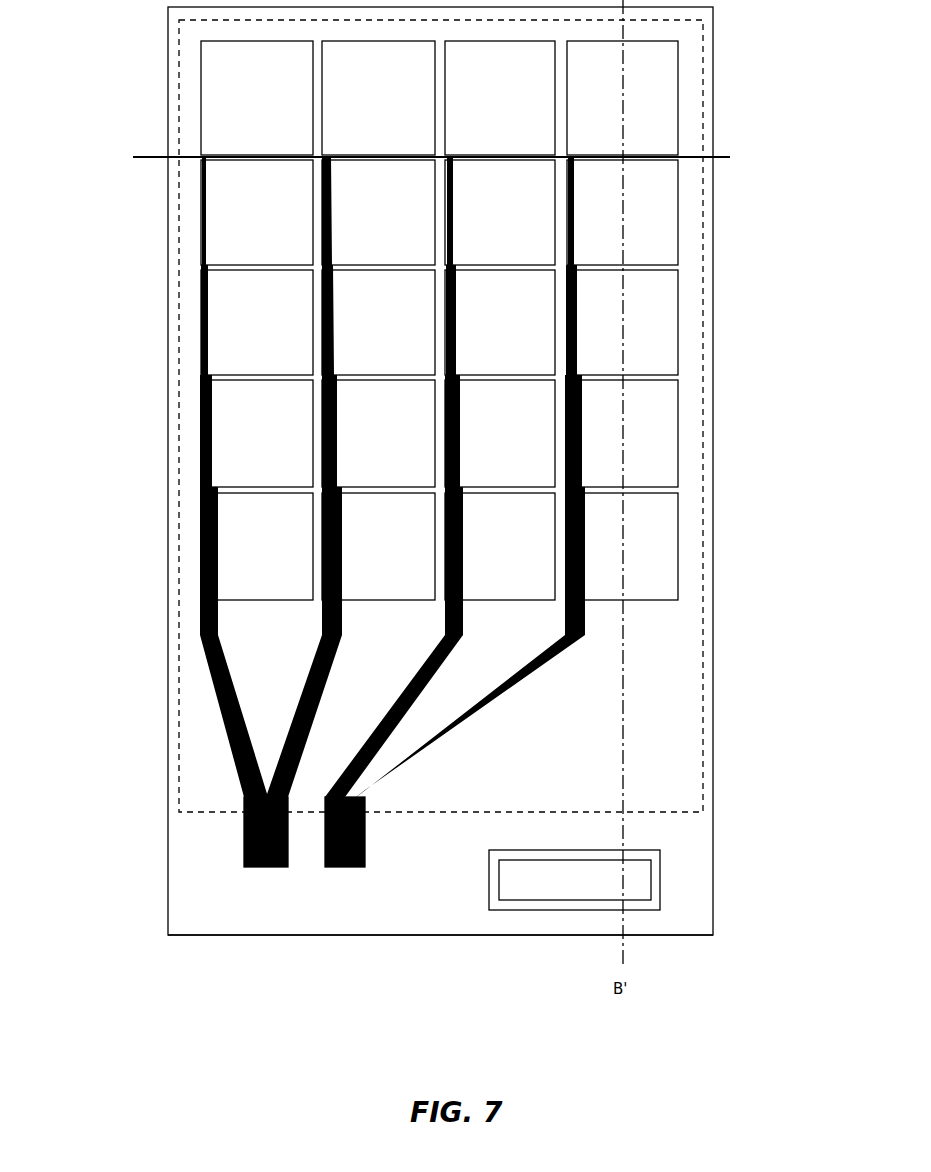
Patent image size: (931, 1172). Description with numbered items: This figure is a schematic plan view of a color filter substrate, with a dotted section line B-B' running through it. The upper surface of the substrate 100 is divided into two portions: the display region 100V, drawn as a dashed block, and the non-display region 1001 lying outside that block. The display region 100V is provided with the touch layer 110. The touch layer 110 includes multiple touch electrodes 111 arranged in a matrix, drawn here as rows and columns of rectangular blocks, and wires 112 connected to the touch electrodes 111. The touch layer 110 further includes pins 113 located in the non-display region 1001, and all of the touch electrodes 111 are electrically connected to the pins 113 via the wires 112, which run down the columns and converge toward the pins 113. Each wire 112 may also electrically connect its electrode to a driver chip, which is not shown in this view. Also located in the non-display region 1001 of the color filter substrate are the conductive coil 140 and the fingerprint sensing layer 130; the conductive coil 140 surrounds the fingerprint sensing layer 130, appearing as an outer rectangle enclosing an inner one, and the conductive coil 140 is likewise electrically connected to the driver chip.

The substrate 100 is at (508, 471).
The non-display region 1001 is at (680, 839).
The display region 100V is at (680, 157).
The touch layer 110 is at (375, 423).
The touch electrode 111 is at (225, 63).
The wire 112 is at (414, 477).
The pin 113 is at (244, 858).
The fingerprint sensing layer 130 is at (637, 870).
The conductive coil 140 is at (660, 898).